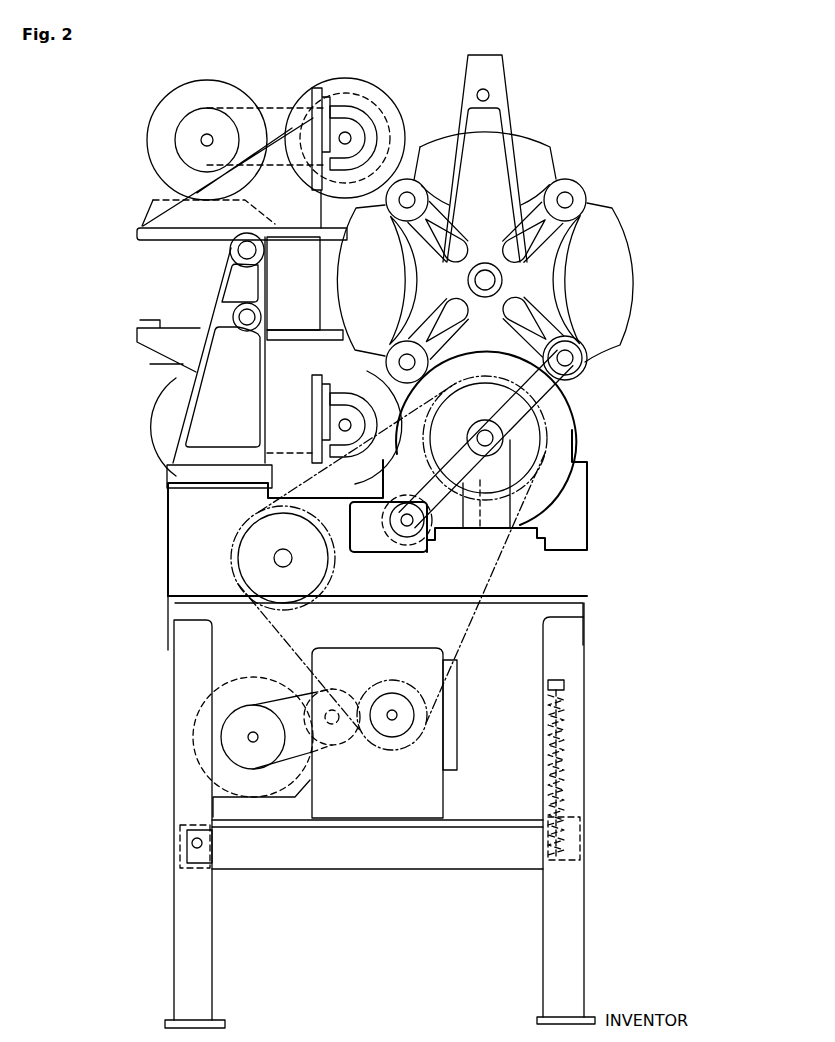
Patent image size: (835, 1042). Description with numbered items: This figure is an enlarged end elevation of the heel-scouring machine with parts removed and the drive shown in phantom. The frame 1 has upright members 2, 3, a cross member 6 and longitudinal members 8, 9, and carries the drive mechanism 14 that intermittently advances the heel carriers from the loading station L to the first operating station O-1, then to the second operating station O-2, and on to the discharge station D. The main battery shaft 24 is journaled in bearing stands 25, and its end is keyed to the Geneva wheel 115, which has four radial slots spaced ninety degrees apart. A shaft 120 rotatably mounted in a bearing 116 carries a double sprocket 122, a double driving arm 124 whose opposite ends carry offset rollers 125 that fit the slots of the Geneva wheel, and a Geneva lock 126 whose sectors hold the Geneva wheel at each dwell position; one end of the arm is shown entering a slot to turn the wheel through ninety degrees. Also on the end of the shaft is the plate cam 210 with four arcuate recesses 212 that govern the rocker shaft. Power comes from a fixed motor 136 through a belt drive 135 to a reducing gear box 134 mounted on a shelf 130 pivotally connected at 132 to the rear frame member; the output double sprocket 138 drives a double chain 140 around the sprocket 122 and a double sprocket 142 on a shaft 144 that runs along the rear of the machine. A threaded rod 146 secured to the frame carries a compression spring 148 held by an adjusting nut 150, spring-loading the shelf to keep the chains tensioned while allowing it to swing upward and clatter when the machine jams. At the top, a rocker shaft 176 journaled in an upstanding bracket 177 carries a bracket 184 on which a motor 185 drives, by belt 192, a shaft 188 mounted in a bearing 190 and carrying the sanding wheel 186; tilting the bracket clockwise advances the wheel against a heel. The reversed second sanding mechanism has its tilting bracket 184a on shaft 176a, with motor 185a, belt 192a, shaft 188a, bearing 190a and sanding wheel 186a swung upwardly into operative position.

The frame 1 is at (162, 921).
The upright member 2 is at (196, 948).
The upright member 3 is at (575, 941).
The cross member 6 is at (325, 870).
The longitudinal member 8 is at (166, 840).
The longitudinal member 9 is at (168, 618).
The drive mechanism 14 is at (485, 247).
The main battery shaft 24 is at (503, 280).
The bearing stand 25 is at (513, 107).
The Geneva wheel 115 is at (556, 268).
The bearing 116 is at (452, 530).
The shaft 120 is at (482, 430).
The double sprocket 122 is at (418, 473).
The double driving arm 124 is at (516, 378).
The offset roller 125 is at (589, 358).
The Geneva lock 126 is at (535, 515).
The shelf 130 is at (397, 820).
The pivotal connection 132 is at (203, 843).
The reducing gear box 134 is at (366, 668).
The belt drive 135 is at (266, 701).
The motor 136 is at (255, 678).
The double sprocket 138 is at (428, 682).
The double chain 140 is at (473, 628).
The double sprocket 142 is at (333, 581).
The shaft 144 is at (285, 556).
The threaded rod 146 is at (562, 720).
The compression spring 148 is at (566, 780).
The adjusting nut 150 is at (566, 690).
The rocker shaft 176 is at (230, 251).
The rocker shaft 176a is at (236, 315).
The upstanding bracket 177 is at (220, 283).
The bracket 184 is at (163, 233).
The tilting bracket 184a is at (138, 342).
The motor 185 is at (180, 96).
The motor 185a is at (156, 433).
The sanding wheel 186 is at (352, 82).
The sanding wheel 186a is at (320, 362).
The shaft 188 is at (358, 130).
The shaft 188a is at (338, 424).
The bearing 190 is at (357, 128).
The bearing 190a is at (318, 388).
The belt 192 is at (275, 104).
The belt 192a is at (264, 441).
The plate cam 210 is at (505, 247).
The arcuate recess 212 is at (607, 203).
The loading station L is at (594, 176).
The discharge station D is at (582, 392).
The first operating station O-1 is at (413, 136).
The second operating station O-2 is at (363, 340).